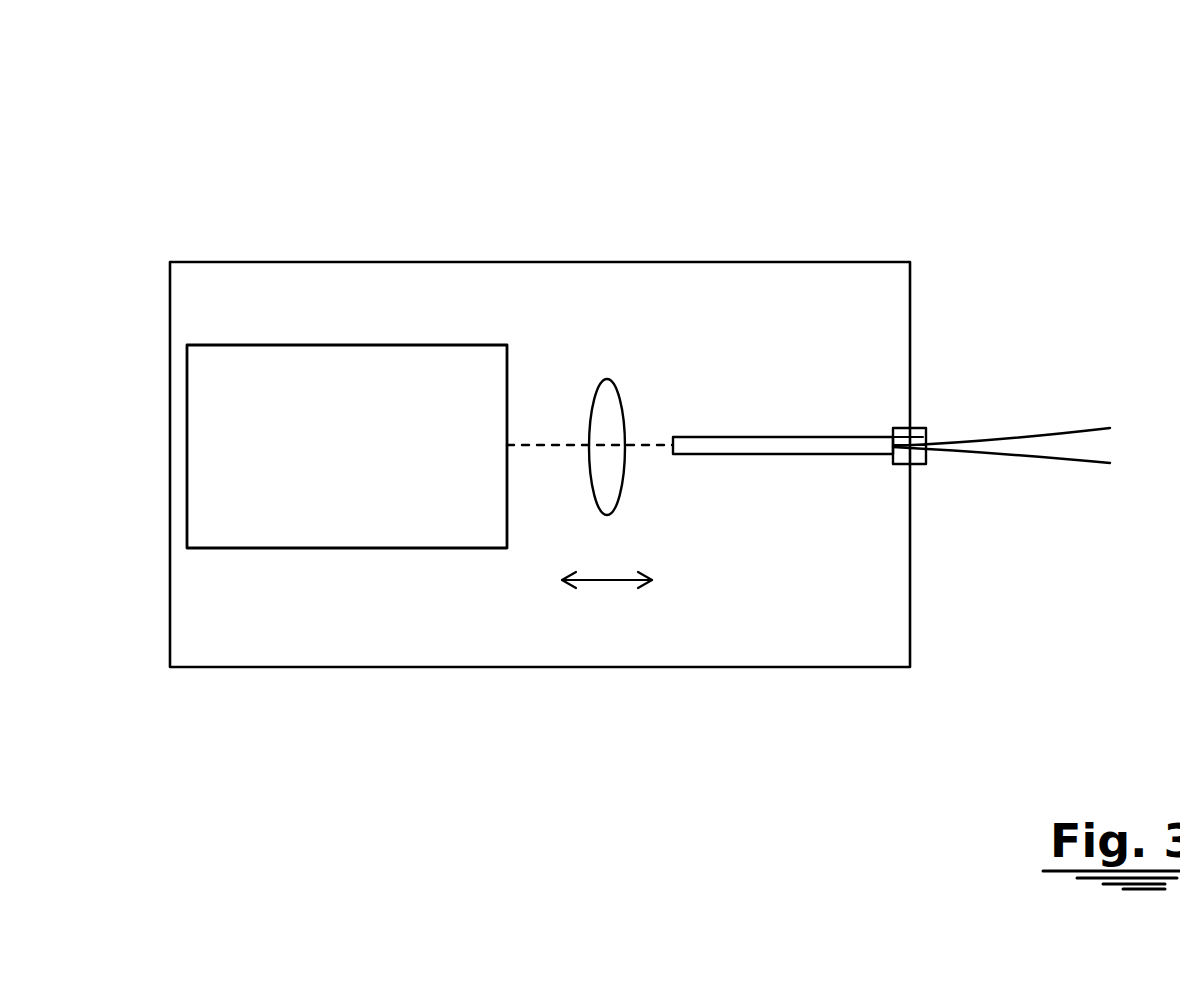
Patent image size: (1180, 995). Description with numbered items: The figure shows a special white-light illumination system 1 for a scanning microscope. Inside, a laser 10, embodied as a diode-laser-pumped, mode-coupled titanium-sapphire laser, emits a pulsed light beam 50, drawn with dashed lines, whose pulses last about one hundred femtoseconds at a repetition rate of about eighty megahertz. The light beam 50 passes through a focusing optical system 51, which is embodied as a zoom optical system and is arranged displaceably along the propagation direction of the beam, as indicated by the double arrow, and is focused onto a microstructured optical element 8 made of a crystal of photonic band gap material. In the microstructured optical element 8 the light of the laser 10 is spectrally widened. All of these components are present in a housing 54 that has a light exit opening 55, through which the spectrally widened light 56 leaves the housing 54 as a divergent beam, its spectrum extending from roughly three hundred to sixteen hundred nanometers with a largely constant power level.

The illumination system 1 is at (401, 166).
The microstructured optical element 8 is at (780, 445).
The laser 10 is at (354, 362).
The pulsed light beam 50 is at (522, 443).
The focusing optical system 51 is at (607, 480).
The housing 54 is at (355, 668).
The light exit opening 55 is at (935, 433).
The spectrally widened light 56 is at (977, 447).